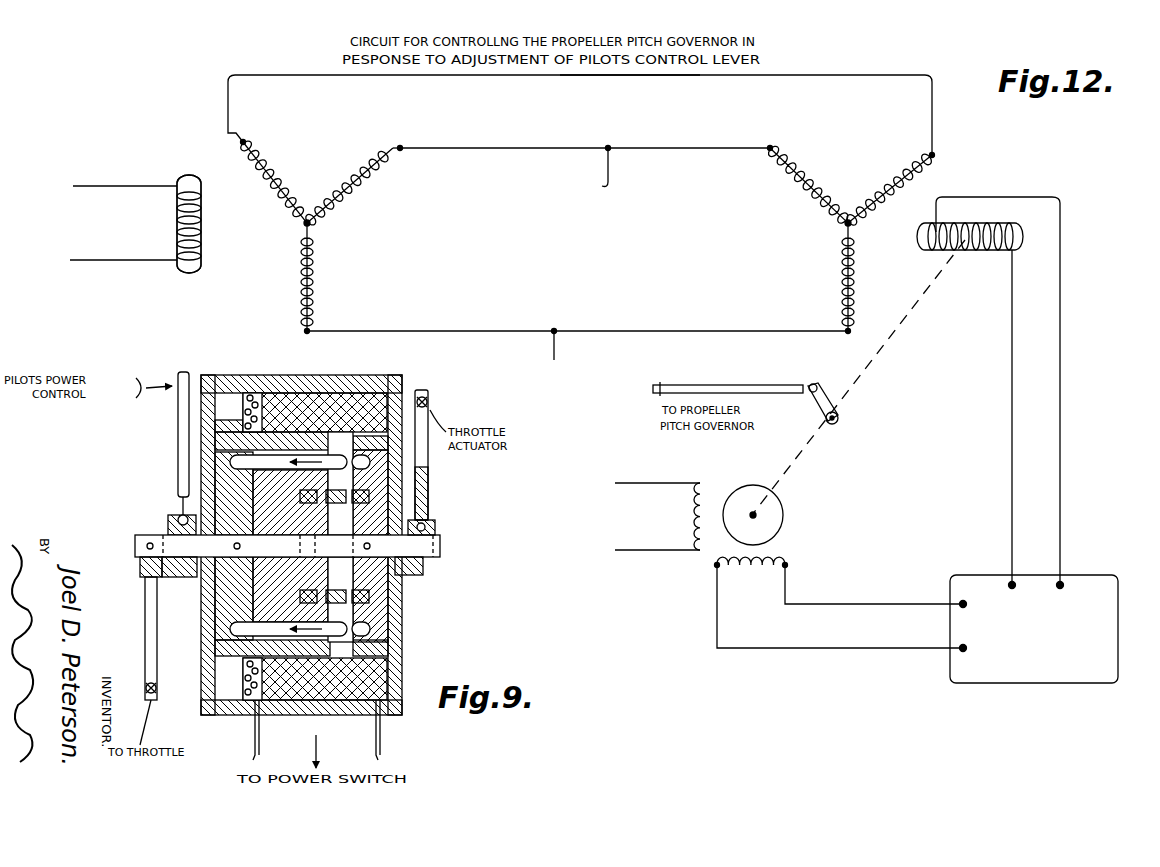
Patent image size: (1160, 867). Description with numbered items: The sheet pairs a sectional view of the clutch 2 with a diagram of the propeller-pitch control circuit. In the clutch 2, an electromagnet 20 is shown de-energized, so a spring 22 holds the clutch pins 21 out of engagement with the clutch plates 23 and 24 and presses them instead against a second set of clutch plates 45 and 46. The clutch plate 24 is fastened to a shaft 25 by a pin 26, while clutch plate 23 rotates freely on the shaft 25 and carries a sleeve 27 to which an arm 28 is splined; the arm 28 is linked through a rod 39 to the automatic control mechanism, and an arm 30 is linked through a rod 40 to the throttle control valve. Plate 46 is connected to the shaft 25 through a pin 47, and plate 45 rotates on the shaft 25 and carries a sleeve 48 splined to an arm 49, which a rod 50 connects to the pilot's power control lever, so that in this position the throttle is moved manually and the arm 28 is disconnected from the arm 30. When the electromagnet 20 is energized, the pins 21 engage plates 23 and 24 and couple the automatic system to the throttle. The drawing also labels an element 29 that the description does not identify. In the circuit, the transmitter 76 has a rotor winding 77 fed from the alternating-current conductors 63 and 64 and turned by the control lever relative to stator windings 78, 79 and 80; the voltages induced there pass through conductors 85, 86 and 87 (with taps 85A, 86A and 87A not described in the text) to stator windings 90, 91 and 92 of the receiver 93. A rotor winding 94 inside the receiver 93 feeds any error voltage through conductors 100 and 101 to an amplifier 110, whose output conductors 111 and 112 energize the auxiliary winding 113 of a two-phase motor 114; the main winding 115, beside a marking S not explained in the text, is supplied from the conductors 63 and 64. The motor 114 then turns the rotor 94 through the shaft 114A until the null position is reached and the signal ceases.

In FIG. 9, the clutch 2 is at (396, 612).
In FIG. 9, the electromagnet 20 is at (365, 398).
In FIG. 9, the clutch pins 21 is at (240, 460).
In FIG. 9, the spring 22 is at (392, 628).
In FIG. 9, the clutch plate 23 is at (428, 490).
In FIG. 9, the clutch plate 24 is at (412, 590).
In FIG. 9, the shaft 25 is at (425, 548).
In FIG. 9, the pin 26 is at (398, 550).
In FIG. 9, the sleeve 27 is at (438, 530).
In FIG. 9, the arm 28 is at (430, 502).
In FIG. 9, the pivot pin 29 is at (146, 546).
In FIG. 9, the arm 30 is at (147, 640).
In FIG. 9, the rod 39 is at (428, 403).
In FIG. 9, the rod 40 is at (146, 688).
In FIG. 9, the clutch plate 45 is at (225, 488).
In FIG. 9, the clutch plate 46 is at (250, 512).
In FIG. 9, the pin 47 is at (233, 546).
In FIG. 9, the sleeve 48 is at (165, 570).
In FIG. 9, the arm 49 is at (186, 578).
In FIG. 9, the rod 50 is at (176, 416).
In FIG. 12, the electrical conductor 63 is at (100, 189).
In FIG. 12, the electrical conductor 64 is at (96, 262).
In FIG. 12, the transmitter 76 is at (258, 306).
In FIG. 12, the rotor winding 77 is at (187, 177).
In FIG. 12, the stator winding 78 is at (272, 166).
In FIG. 12, the stator winding 79 is at (350, 200).
In FIG. 12, the stator winding 80 is at (316, 292).
In FIG. 12, the conductor 85 is at (371, 78).
In FIG. 12, the conductor 85A is at (588, 77).
In FIG. 12, the conductor 86 is at (500, 150).
In FIG. 12, the conductor tap 86A is at (597, 185).
In FIG. 12, the conductor 87 is at (505, 330).
In FIG. 12, the conductor tap 87A is at (553, 353).
In FIG. 12, the stator winding 90 is at (892, 182).
In FIG. 12, the stator winding 91 is at (792, 198).
In FIG. 12, the stator winding 92 is at (840, 297).
In FIG. 12, the receiver 93 is at (968, 349).
In FIG. 12, the rotor winding 94 is at (968, 242).
In FIG. 12, the electrical conductor 100 is at (1068, 396).
In FIG. 12, the electrical conductor 101 is at (1012, 415).
In FIG. 12, the amplifier 110 is at (1054, 652).
In FIG. 12, the electrical conductor 111 is at (840, 603).
In FIG. 12, the electrical conductor 112 is at (882, 650).
In FIG. 12, the auxiliary winding 113 is at (751, 572).
In FIG. 12, the two-phase motor 114 is at (870, 529).
In FIG. 12, the shaft 114A is at (867, 378).
In FIG. 12, the main winding 115 is at (692, 506).
In FIG. 12, the switch S is at (616, 525).